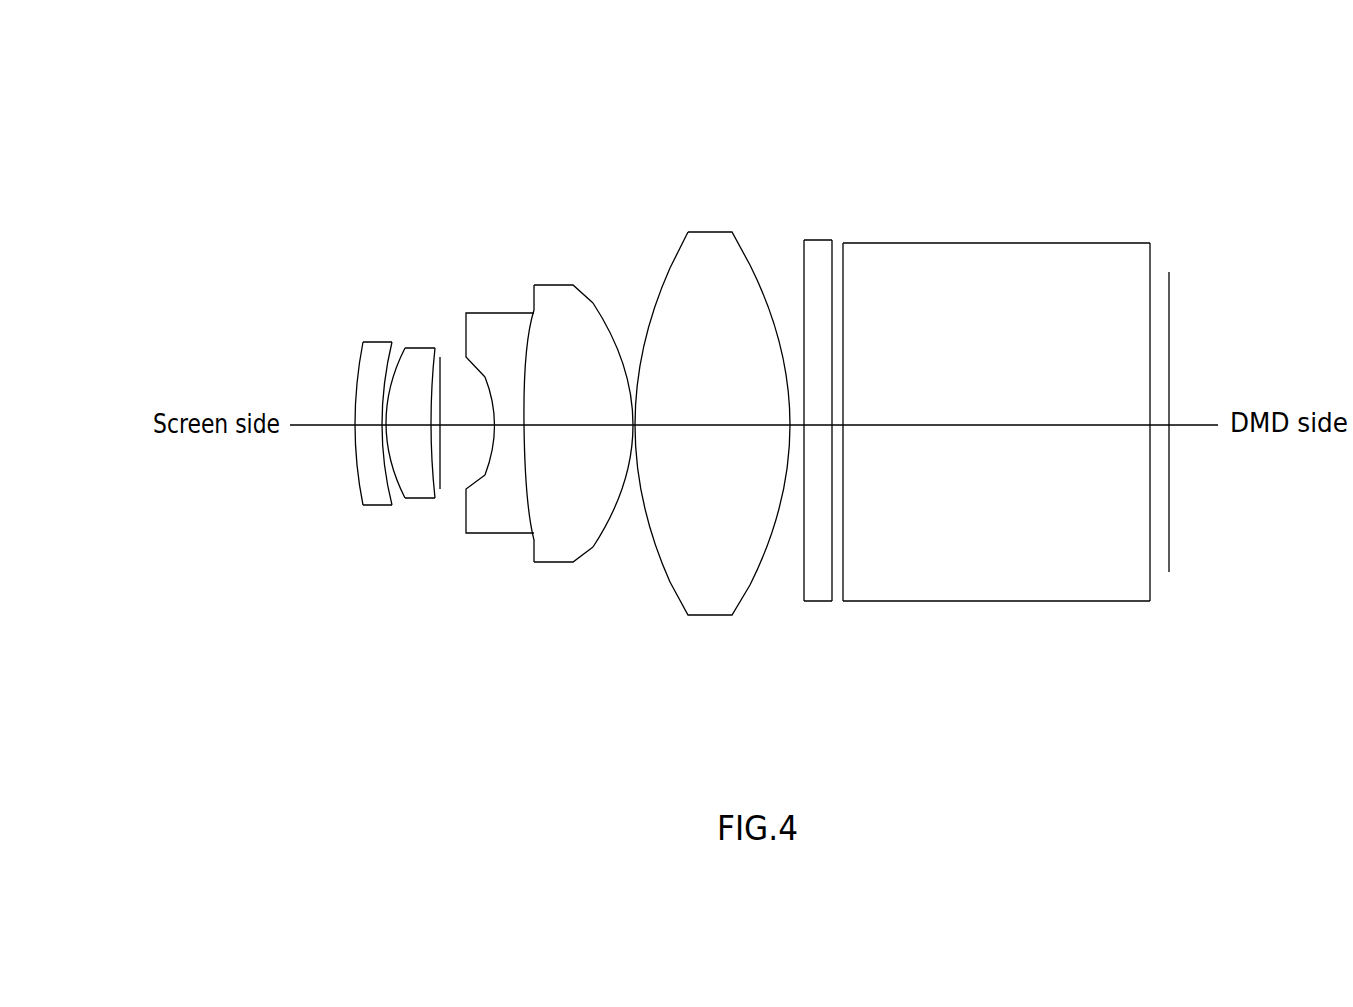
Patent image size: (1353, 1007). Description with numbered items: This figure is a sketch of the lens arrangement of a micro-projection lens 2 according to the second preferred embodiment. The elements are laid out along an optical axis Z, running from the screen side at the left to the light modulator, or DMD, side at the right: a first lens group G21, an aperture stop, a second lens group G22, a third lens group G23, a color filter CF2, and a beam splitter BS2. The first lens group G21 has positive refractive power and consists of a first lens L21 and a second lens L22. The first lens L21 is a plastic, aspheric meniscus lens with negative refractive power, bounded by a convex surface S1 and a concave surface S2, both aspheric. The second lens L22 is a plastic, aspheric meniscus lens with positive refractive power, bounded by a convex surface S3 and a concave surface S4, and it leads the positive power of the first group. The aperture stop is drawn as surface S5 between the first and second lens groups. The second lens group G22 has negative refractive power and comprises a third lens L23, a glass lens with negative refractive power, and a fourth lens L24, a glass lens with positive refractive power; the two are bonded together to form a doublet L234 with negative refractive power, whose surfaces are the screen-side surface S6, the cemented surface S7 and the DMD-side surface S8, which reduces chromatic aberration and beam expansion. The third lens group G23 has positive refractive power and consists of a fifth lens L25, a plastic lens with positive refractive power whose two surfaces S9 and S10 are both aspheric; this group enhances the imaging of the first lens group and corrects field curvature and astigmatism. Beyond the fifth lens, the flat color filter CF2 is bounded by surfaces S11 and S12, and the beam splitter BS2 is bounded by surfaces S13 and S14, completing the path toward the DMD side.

The micro-projection lens 2 is at (1300, 162).
The optical axis Z is at (317, 428).
The first lens group G21 is at (362, 450).
The second lens group G22 is at (549, 446).
The third lens group G23 is at (712, 455).
The first lens L21 is at (337, 438).
The second lens L22 is at (407, 425).
The third lens L23 is at (500, 432).
The fourth lens L24 is at (577, 394).
The doublet L234 is at (549, 421).
The fifth lens L25 is at (712, 430).
The color filter CF2 is at (824, 402).
The beam splitter BS2 is at (1032, 426).
The convex surface S1 is at (358, 380).
The concave surface S2 is at (388, 380).
The convex surface S3 is at (392, 378).
The concave surface S4 is at (434, 378).
The aperture surface S5 is at (440, 376).
The screen-side surface of doublet S6 is at (482, 378).
The cemented surface of doublet S7 is at (521, 322).
The DMD-side surface of doublet S8 is at (596, 305).
The aspheric surface of fifth lens S9 is at (670, 273).
The aspheric surface of fifth lens S10 is at (748, 268).
The screen-side surface of color filter S11 is at (804, 255).
The DMD-side surface of color filter S12 is at (832, 257).
The screen-side surface of beam splitter S13 is at (845, 260).
The DMD-side surface of beam splitter S14 is at (1150, 256).